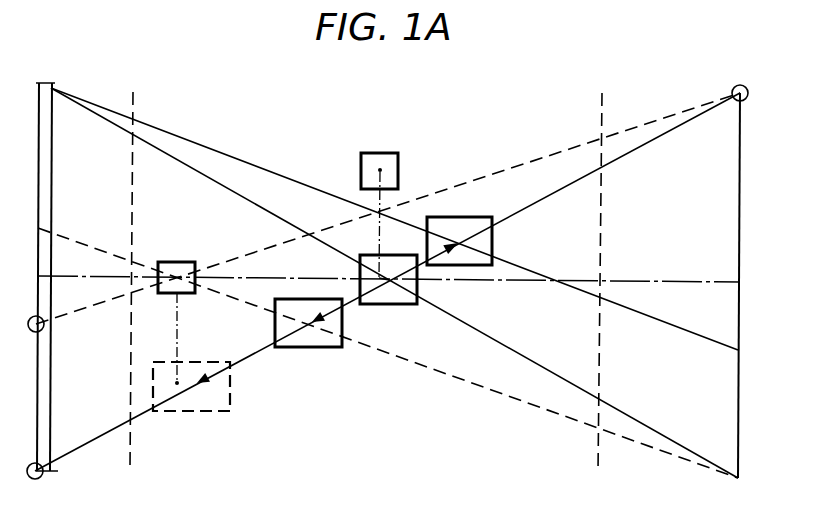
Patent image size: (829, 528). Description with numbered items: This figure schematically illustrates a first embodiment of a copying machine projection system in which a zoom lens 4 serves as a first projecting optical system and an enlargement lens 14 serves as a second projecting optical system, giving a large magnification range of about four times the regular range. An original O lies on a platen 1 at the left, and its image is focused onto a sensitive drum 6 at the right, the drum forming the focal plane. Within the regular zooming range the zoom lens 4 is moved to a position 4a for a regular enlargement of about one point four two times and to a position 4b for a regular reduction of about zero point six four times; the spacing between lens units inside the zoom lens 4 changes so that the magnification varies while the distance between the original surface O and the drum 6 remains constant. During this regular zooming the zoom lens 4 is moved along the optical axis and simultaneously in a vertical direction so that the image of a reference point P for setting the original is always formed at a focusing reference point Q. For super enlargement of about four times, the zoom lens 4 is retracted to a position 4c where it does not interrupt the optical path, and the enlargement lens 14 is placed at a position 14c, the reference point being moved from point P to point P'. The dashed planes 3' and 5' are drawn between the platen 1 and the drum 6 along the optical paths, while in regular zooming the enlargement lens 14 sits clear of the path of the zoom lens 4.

The platen 1 is at (45, 83).
The original O is at (37, 184).
The reference point for setting the original P is at (25, 487).
The reference point for super enlargement P' is at (23, 326).
The focusing reference point Q is at (748, 91).
The sensitive drum 6 is at (740, 250).
The plane 3 prime 3' is at (149, 264).
The plane 5 prime 5' is at (622, 274).
The enlargement lens 14 is at (382, 152).
The position of enlargement lens 14c is at (175, 261).
The zoom lens 4 is at (399, 304).
The zoom lens position for regular enlargement 4a is at (304, 348).
The zoom lens position for regular reduction 4b is at (465, 216).
The retracted zoom lens position 4c is at (205, 412).